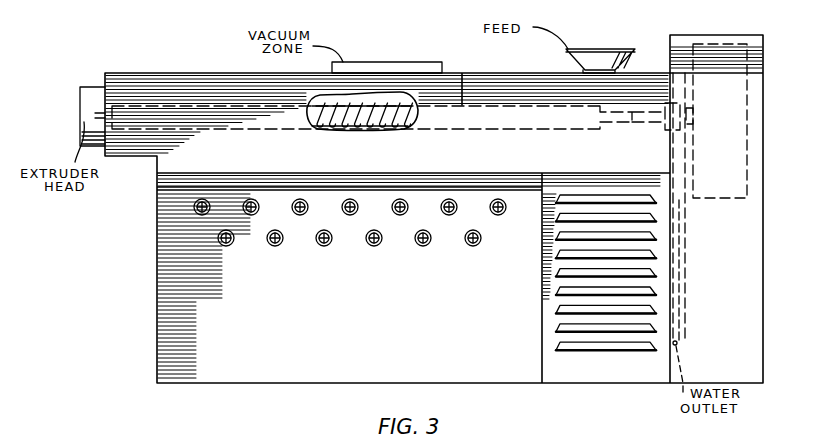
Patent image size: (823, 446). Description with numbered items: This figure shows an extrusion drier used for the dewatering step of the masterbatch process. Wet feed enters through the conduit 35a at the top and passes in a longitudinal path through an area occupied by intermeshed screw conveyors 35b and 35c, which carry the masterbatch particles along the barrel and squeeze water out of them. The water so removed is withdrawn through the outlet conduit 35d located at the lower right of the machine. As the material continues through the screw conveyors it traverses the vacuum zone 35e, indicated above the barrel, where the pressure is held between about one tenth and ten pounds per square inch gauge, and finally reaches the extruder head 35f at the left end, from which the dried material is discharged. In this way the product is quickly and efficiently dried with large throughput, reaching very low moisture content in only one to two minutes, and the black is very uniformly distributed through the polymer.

The conduit 35a is at (622, 50).
The screw conveyor 35b is at (327, 126).
The screw conveyor 35c is at (382, 106).
The outlet conduit 35d is at (683, 240).
The vacuum zone 35e is at (413, 65).
The extruder head 35f is at (82, 88).